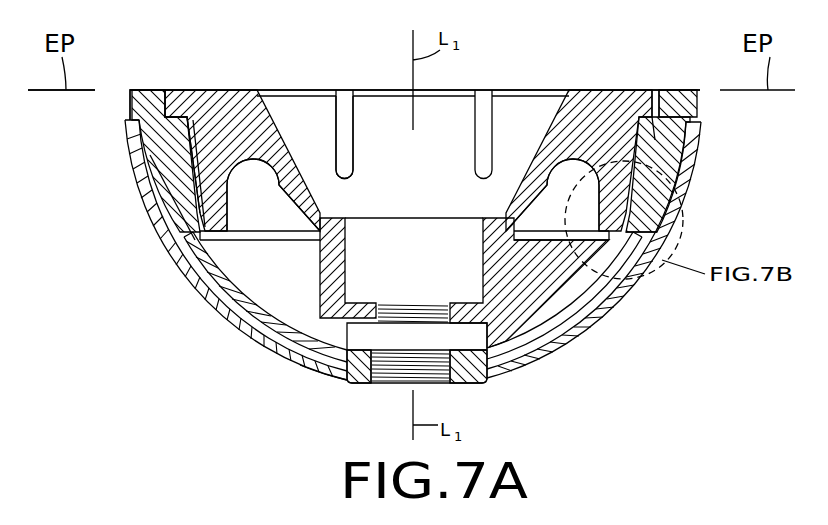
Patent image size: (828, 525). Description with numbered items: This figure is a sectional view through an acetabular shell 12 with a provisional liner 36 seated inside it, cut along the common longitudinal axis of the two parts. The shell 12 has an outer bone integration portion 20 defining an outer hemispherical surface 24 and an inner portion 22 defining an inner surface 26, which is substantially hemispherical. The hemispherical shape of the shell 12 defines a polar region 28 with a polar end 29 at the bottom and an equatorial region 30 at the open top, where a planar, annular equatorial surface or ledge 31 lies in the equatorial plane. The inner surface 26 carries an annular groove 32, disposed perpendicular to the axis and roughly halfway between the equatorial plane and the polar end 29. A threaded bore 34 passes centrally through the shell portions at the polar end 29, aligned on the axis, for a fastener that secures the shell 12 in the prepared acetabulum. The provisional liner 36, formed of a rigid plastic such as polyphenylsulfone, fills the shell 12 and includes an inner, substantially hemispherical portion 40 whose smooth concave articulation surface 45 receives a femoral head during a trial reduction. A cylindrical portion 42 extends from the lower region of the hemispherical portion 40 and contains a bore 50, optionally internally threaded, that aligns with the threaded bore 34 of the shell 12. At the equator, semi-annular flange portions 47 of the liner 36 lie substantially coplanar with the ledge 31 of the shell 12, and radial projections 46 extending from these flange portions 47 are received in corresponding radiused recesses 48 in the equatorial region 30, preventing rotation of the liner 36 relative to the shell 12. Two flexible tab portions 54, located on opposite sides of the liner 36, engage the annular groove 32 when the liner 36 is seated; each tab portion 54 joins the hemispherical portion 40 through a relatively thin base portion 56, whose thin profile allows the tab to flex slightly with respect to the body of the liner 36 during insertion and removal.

The acetabular shell 12 is at (236, 389).
The outer bone integration portion 20 is at (203, 292).
The inner portion 22 is at (165, 181).
The outer hemispherical surface 24 is at (612, 310).
The inner surface 26 is at (665, 160).
The polar region 28 is at (340, 388).
The polar end 29 is at (395, 395).
The equatorial region 30 is at (103, 104).
The equatorial surface or ledge 31 is at (140, 88).
The annular groove 32 is at (655, 228).
The threaded bore 34 is at (449, 383).
The provisional liner 36 is at (560, 55).
The inner hemispherical portion 40 is at (284, 203).
The cylindrical portion 42 is at (548, 330).
The articulation surface 45 is at (308, 150).
The radial projections 46 is at (651, 90).
The semi-annular flange portions 47 is at (188, 90).
The radiused recesses 48 is at (660, 107).
The bore 50 is at (443, 303).
The flexible tab portions 54 is at (230, 130).
The base portion 56 is at (305, 190).